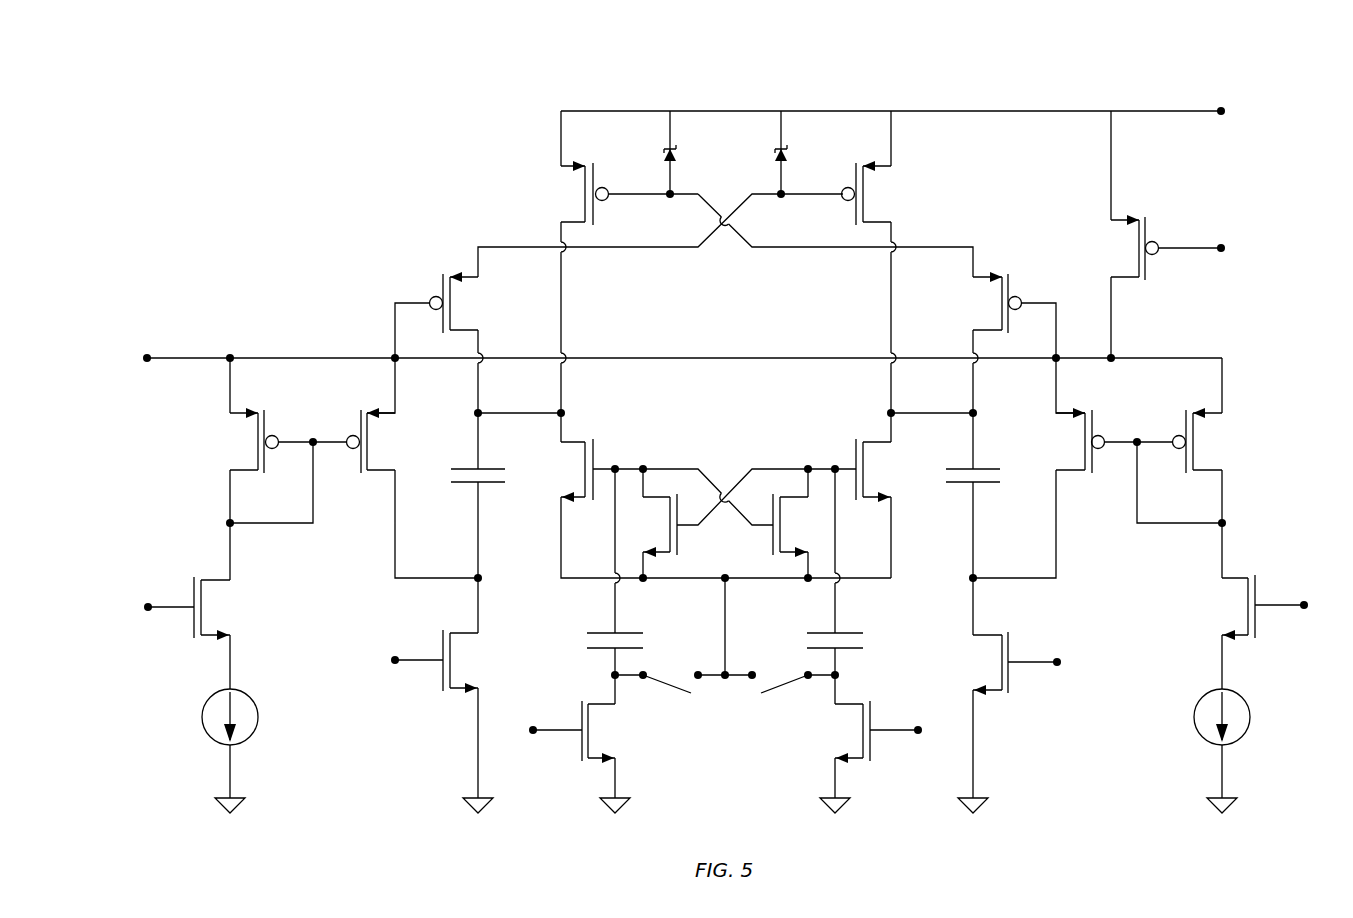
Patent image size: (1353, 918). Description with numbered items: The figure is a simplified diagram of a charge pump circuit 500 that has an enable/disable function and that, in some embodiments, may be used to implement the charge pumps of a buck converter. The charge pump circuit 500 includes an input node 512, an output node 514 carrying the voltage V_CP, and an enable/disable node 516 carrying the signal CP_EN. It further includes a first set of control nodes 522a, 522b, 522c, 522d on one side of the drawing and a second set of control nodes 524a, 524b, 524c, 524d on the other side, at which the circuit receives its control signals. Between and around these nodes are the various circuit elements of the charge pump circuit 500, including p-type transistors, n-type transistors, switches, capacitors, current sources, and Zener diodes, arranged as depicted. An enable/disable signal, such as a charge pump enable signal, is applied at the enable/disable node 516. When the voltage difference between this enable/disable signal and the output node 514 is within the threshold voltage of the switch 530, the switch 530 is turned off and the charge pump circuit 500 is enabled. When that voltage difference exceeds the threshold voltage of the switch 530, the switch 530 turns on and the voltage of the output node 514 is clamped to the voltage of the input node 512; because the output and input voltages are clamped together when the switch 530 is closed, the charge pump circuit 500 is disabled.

The charge pump circuit 500 is at (217, 90).
The input node 512 is at (228, 330).
The output node 514 is at (1206, 75).
The enable/disable node 516 is at (1194, 213).
The control node 522a is at (175, 593).
The control node 522b is at (422, 653).
The control node 522c is at (558, 718).
The control node 522d is at (671, 713).
The control node 524a is at (1277, 590).
The control node 524b is at (1028, 650).
The control node 524c is at (905, 718).
The control node 524d is at (778, 713).
The switch 530 is at (1110, 248).